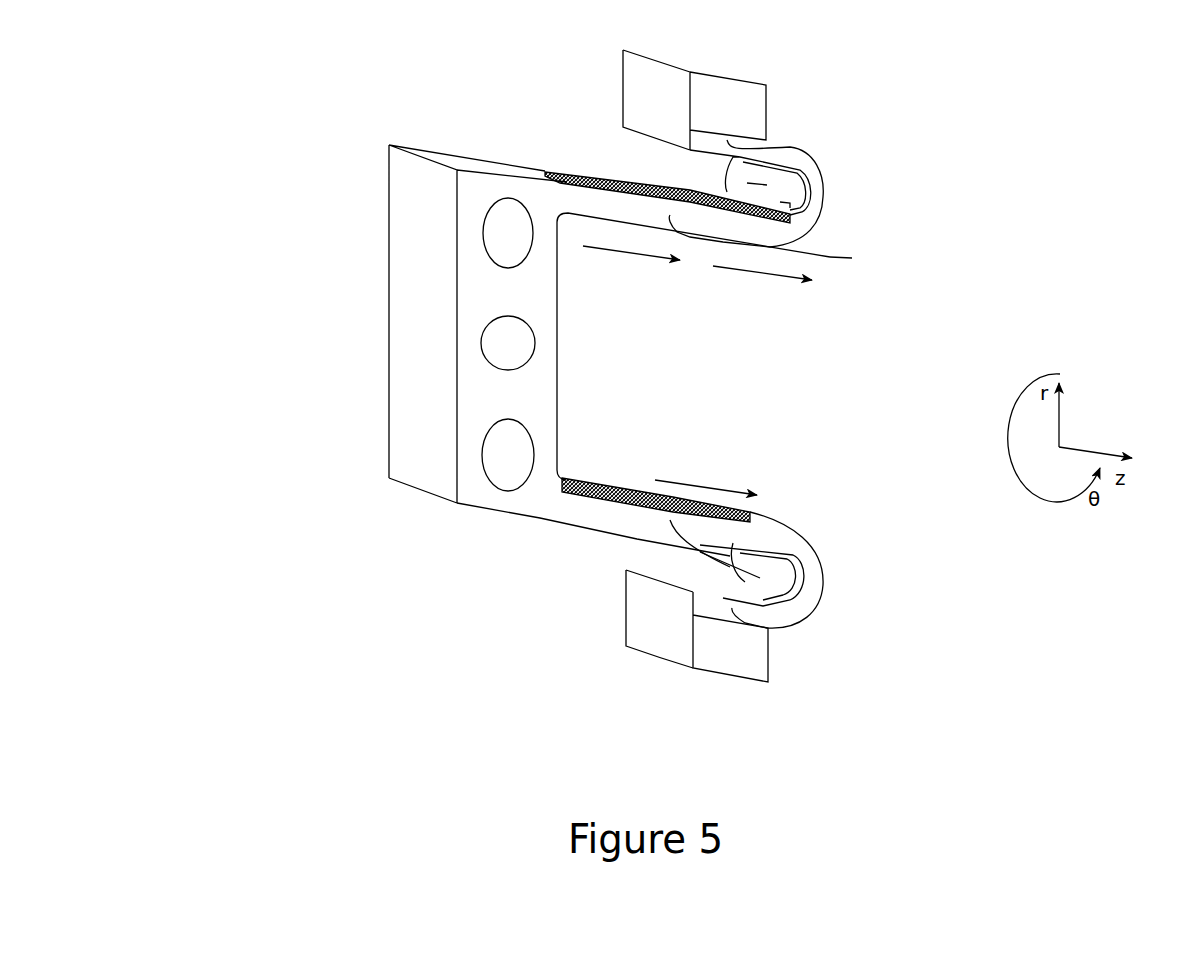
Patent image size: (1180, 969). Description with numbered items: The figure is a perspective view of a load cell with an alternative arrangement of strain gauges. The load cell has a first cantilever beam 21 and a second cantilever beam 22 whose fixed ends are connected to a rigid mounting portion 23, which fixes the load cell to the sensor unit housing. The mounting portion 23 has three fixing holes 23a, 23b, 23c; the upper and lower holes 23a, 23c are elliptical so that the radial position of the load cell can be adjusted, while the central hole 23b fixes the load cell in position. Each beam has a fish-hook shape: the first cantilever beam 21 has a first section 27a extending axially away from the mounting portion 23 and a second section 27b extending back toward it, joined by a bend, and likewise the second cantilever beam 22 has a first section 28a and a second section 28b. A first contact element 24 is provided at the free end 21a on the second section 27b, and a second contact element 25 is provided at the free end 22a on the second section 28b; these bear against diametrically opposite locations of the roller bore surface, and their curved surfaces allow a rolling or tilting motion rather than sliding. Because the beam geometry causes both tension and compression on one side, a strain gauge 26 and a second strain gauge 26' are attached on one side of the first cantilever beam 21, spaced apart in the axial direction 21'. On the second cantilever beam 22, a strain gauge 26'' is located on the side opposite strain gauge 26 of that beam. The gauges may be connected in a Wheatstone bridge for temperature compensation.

The first cantilever beam 21 is at (693, 346).
The free end of the first cantilever beam 21a is at (668, 89).
The axial direction 21' is at (775, 380).
The second cantilever beam 22 is at (634, 538).
The free end of the second cantilever beam 22a is at (665, 610).
The mounting portion 23 is at (468, 272).
The upper fixing hole 23a is at (515, 233).
The central fixing hole 23b is at (497, 331).
The lower fixing hole 23c is at (497, 463).
The first contact element 24 is at (690, 58).
The second contact element 25 is at (730, 667).
The strain gauge 26 is at (578, 306).
The second strain gauge 26' is at (720, 177).
The strain gauge of the second beam 26'' is at (683, 562).
The first section of the first cantilever beam 27a is at (820, 255).
The second section of the first cantilever beam 27b is at (823, 188).
The first section of the second cantilever beam 28a is at (700, 580).
The second section of the second cantilever beam 28b is at (767, 628).